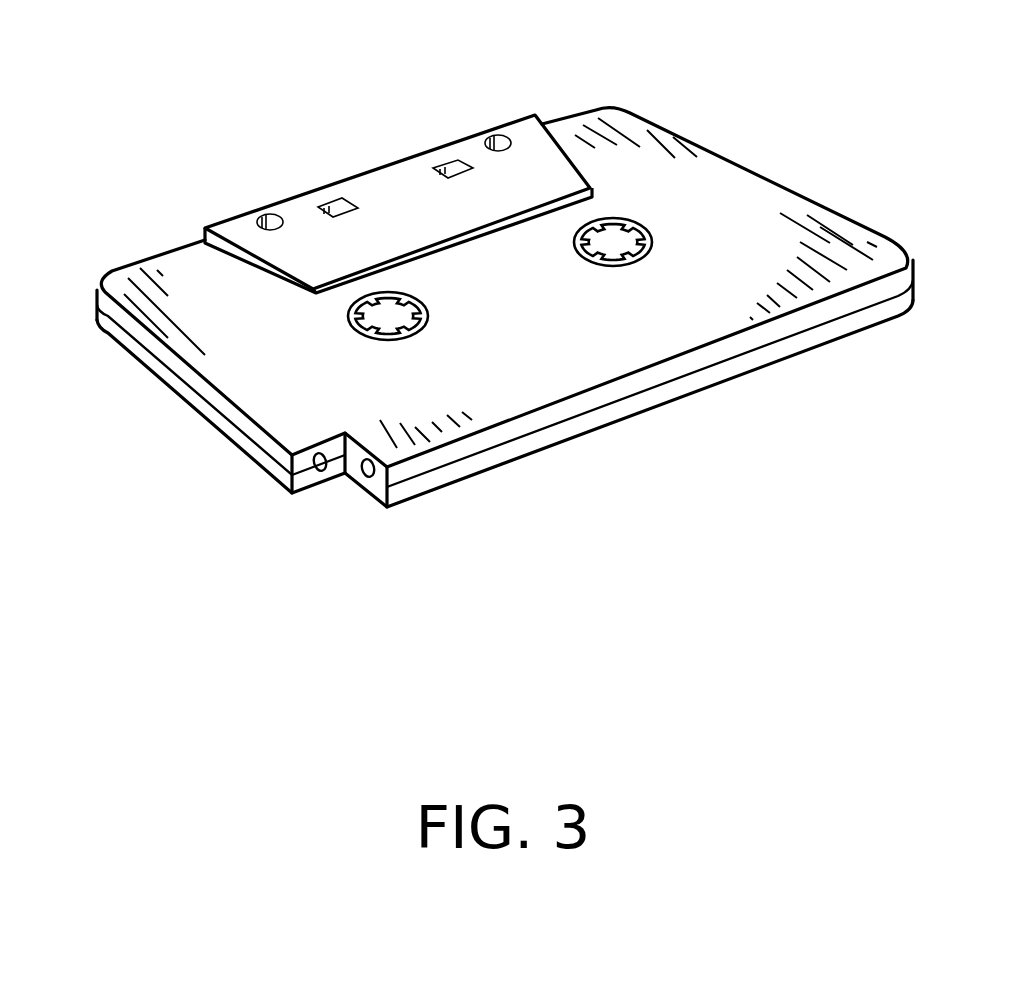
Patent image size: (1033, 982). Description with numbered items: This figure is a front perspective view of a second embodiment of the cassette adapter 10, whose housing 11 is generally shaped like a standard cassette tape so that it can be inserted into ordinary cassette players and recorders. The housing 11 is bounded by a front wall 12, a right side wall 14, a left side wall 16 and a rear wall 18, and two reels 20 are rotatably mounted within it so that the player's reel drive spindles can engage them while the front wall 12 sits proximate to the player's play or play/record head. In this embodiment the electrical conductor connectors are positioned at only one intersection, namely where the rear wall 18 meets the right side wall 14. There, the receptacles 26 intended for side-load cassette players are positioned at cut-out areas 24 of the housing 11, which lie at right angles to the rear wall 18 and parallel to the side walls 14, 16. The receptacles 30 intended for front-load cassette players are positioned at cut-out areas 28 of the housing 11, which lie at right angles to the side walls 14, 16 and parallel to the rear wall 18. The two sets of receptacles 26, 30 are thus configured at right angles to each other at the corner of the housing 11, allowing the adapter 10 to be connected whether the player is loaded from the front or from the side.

The adapter 10 is at (207, 122).
The housing 11 is at (342, 392).
The front wall 12 is at (564, 118).
The right side wall 14 is at (140, 358).
The left side wall 16 is at (738, 163).
The rear wall 18 is at (653, 392).
The reels 20 is at (430, 317).
The cut-out areas 24 is at (388, 506).
The receptacles 26 is at (363, 481).
The cut-out areas 28 is at (303, 494).
The receptacles 30 is at (320, 478).